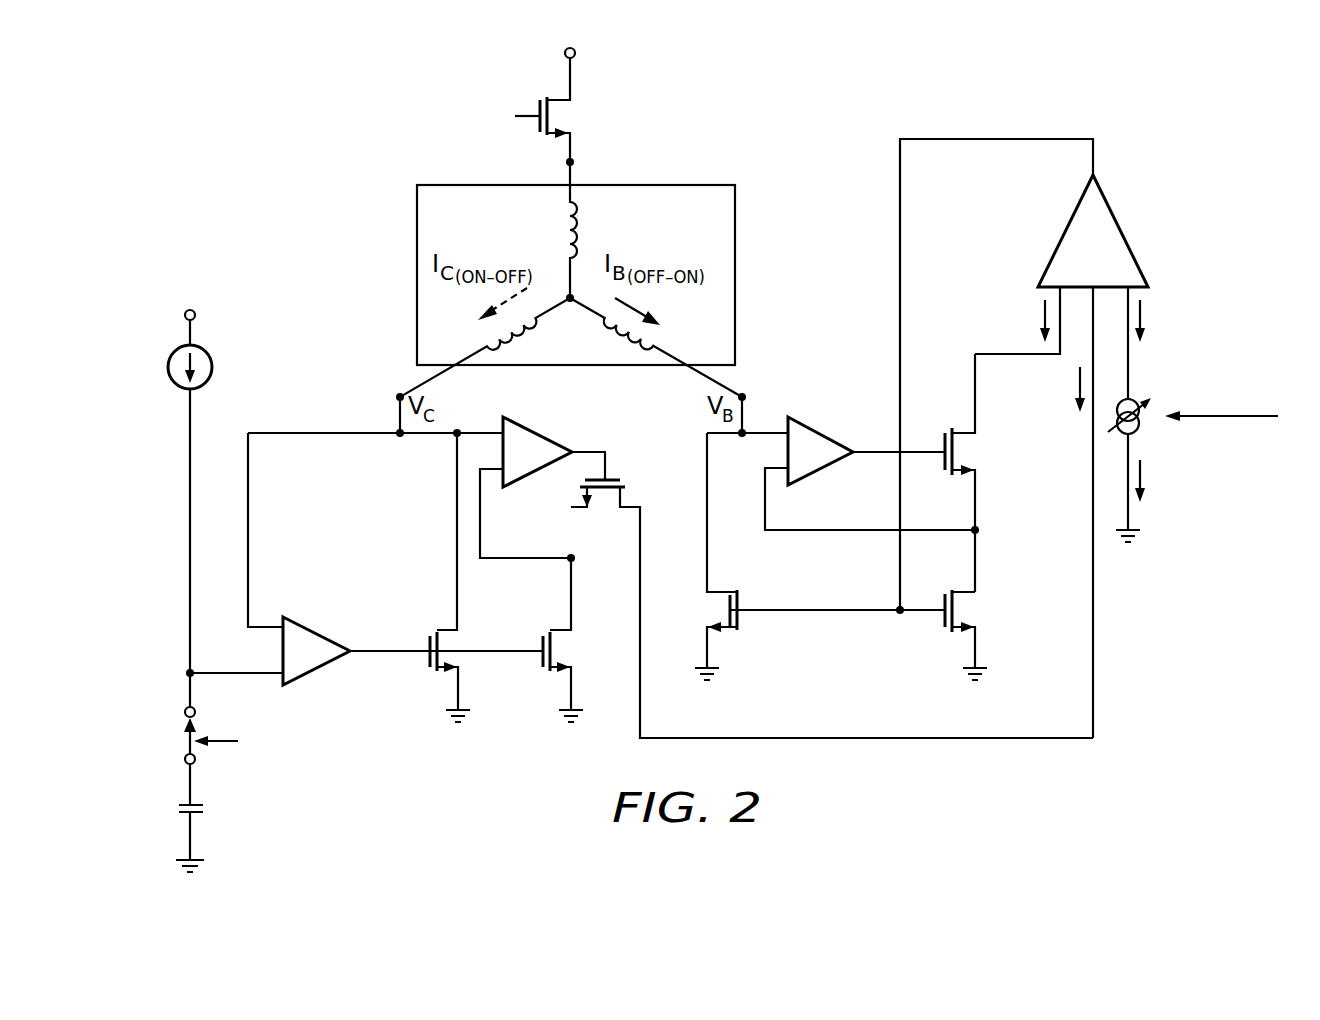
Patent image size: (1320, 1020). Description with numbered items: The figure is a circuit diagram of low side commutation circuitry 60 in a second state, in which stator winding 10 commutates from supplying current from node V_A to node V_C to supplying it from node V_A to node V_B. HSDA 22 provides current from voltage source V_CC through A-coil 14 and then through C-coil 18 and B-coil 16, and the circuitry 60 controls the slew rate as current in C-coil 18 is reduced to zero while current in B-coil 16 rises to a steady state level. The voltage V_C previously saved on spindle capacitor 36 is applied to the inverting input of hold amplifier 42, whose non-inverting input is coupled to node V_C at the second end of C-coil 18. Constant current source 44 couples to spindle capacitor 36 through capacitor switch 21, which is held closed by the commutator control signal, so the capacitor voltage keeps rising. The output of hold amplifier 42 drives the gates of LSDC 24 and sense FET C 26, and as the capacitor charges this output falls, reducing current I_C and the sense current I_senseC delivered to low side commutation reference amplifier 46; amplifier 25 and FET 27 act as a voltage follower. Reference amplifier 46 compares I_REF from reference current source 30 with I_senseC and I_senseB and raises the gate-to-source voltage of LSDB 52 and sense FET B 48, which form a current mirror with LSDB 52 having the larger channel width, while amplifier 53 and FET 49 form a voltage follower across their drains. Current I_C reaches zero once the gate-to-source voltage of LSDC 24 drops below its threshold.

The stator winding 10 is at (430, 185).
The A-coil 14 is at (563, 222).
The B-coil 16 is at (646, 352).
The C-coil 18 is at (498, 352).
The capacitor switch 21 is at (184, 742).
The HSDA 22 is at (538, 104).
The LSDC 24 is at (436, 632).
The amplifier 25 is at (548, 418).
The sense FET C 26 is at (549, 632).
The FET 27 is at (612, 478).
The reference current source 30 is at (1135, 400).
The spindle capacitor 36 is at (178, 810).
The hold amplifier 42 is at (325, 618).
The constant current source 44 is at (172, 360).
The low side commutation reference amplifier 46 is at (1118, 226).
The sense FET B 48 is at (950, 632).
The FET 49 is at (955, 428).
The LSDB 52 is at (742, 632).
The amplifier 53 is at (832, 418).
The low side commutation circuitry 60 is at (1108, 86).